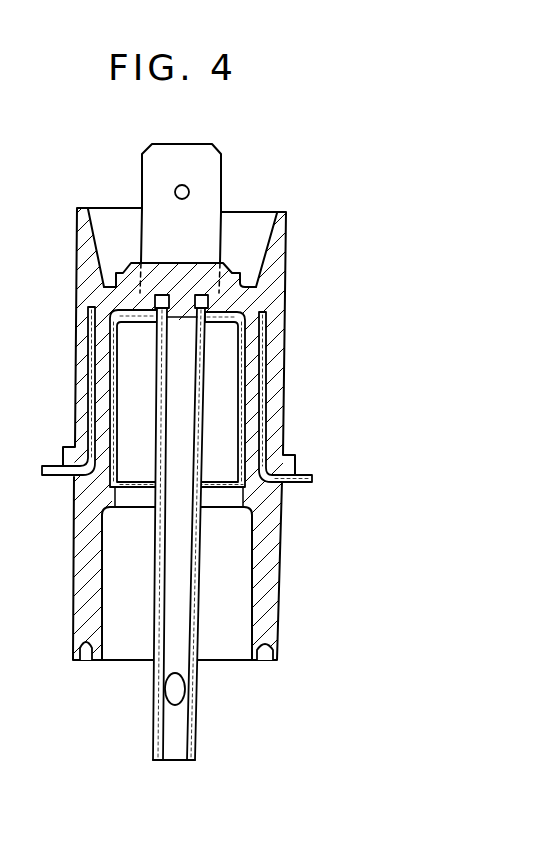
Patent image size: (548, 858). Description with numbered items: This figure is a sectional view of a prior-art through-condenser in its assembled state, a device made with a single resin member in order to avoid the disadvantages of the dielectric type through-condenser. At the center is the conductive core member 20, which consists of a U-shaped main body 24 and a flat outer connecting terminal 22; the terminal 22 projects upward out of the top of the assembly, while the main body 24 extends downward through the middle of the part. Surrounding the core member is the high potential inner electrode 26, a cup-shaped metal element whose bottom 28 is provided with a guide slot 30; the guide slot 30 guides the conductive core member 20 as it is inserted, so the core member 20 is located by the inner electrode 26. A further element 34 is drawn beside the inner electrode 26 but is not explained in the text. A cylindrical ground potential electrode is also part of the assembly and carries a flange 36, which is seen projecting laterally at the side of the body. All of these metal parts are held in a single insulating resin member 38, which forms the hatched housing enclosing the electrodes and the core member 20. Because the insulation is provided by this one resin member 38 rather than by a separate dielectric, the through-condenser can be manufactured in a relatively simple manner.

The conductive core member 20 is at (184, 501).
The flat outer connecting terminal 22 is at (210, 182).
The U-shaped main body 24 is at (197, 602).
The high potential inner electrode 26 is at (108, 386).
The bottom 28 is at (152, 302).
The guide slot 30 is at (210, 306).
The second cup electrode 34 is at (263, 386).
The flange 36 is at (306, 486).
The single insulating resin member 38 is at (85, 617).